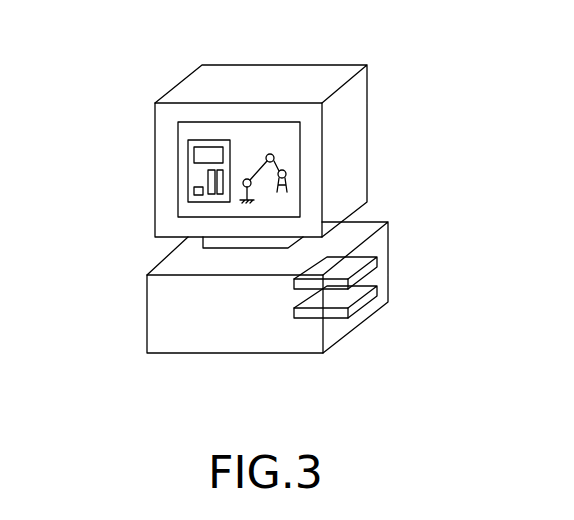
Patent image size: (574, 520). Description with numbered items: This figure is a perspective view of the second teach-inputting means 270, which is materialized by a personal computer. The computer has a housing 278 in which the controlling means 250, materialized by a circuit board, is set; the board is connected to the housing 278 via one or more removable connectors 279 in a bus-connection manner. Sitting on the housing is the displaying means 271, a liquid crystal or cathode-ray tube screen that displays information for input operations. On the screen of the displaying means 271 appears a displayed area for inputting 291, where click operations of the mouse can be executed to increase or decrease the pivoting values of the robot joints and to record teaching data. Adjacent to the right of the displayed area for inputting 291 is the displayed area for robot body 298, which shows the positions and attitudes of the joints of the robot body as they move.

The displaying means 271 is at (155, 142).
The displayed area for inputting 291 is at (208, 147).
The displayed area for robot body 298 is at (270, 134).
The second teach-inputting means 270 is at (147, 318).
The housing 278 is at (165, 263).
The controlling means 250 is at (360, 282).
The removable connectors 279 is at (309, 314).